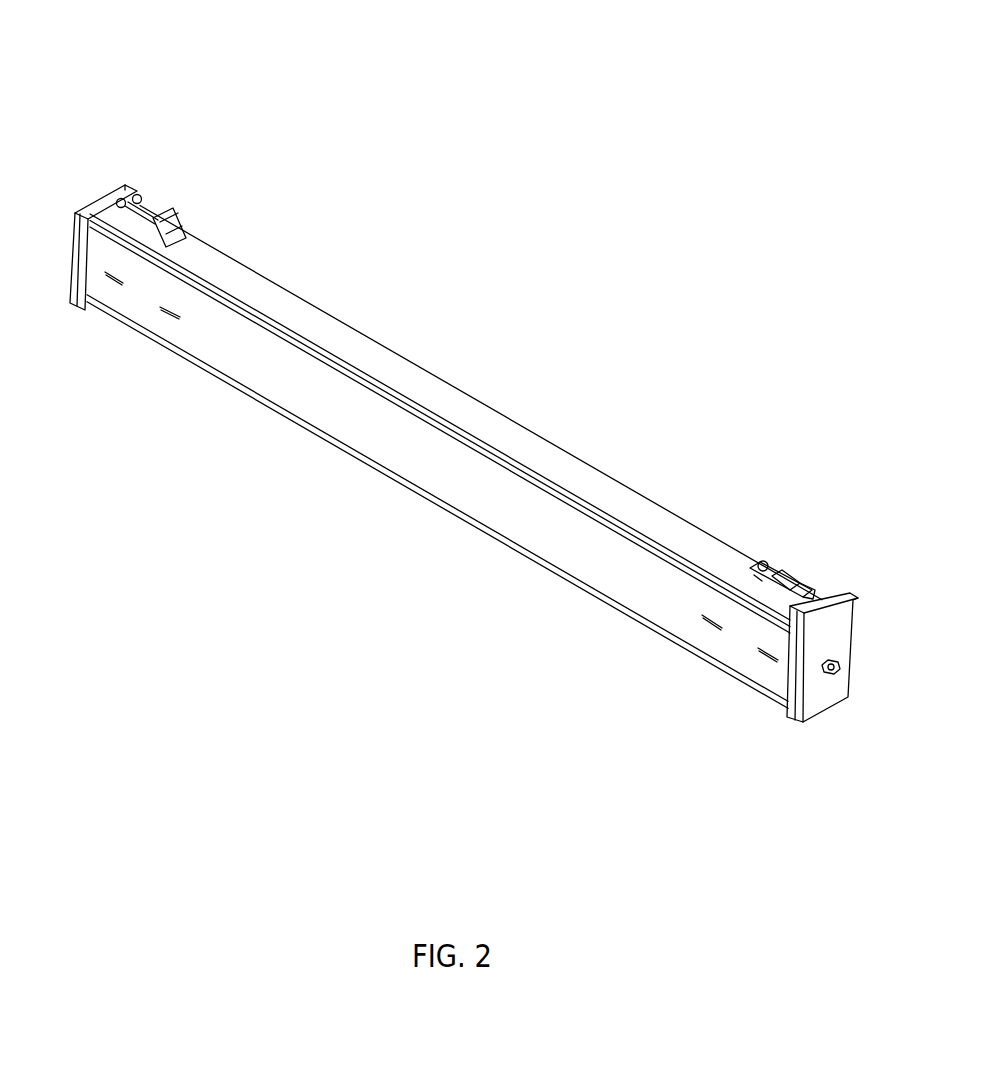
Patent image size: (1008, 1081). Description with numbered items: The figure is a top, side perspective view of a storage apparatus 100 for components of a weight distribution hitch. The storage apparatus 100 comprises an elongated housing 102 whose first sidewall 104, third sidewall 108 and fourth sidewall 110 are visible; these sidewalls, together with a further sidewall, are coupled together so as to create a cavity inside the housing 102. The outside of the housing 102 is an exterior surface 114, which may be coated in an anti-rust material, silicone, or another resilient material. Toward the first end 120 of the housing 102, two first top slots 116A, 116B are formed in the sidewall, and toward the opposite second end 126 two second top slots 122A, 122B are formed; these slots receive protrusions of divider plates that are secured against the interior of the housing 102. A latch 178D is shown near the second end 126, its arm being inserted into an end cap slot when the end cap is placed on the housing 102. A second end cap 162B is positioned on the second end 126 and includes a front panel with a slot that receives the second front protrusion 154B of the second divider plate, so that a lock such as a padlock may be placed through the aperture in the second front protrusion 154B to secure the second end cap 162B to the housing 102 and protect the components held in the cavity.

The storage apparatus 100 is at (464, 437).
The housing 102 is at (323, 317).
The first sidewall 104 is at (440, 513).
The third sidewall 108 is at (360, 363).
The fourth sidewall 110 is at (405, 437).
The exterior surface 114 is at (262, 298).
The first top slot 116A is at (127, 283).
The first top slot 116B is at (180, 315).
The first end 120 is at (133, 245).
The second top slot 122A is at (773, 662).
The second top slot 122B is at (707, 620).
The second end 126 is at (714, 504).
The second front protrusion 154B is at (822, 663).
The second end cap 162B is at (855, 679).
The latch 178D is at (777, 577).